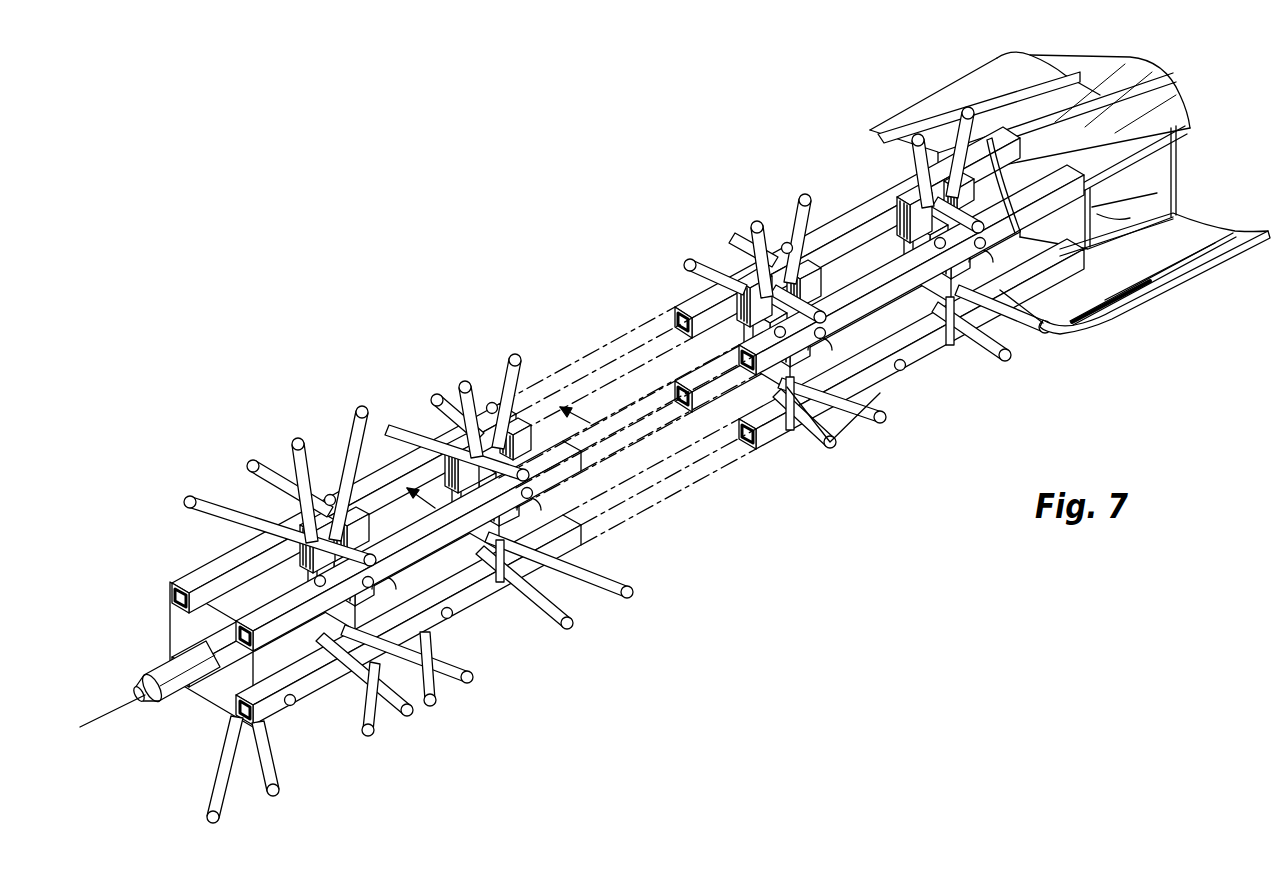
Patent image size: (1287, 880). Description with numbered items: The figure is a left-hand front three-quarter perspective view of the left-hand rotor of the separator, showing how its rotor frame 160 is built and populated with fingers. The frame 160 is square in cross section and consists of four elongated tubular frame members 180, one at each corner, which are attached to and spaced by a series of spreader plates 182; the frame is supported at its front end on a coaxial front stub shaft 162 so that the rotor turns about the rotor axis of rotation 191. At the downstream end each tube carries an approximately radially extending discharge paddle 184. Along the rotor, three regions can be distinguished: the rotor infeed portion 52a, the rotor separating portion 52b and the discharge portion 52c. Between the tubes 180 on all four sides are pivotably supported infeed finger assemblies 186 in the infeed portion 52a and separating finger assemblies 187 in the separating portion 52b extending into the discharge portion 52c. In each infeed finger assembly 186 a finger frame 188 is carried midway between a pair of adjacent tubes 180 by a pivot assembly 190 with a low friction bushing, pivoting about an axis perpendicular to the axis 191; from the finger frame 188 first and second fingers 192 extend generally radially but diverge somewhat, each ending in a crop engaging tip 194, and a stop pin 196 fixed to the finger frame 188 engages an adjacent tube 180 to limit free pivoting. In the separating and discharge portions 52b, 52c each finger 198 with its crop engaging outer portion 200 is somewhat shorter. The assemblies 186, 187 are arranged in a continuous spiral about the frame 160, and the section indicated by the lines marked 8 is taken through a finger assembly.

The rotor infeed portion 52a is at (395, 587).
The rotor separating portion 52b is at (757, 296).
The discharge portion 52c is at (845, 99).
The section line 8- 8 is at (498, 452).
The rotor frame 160 is at (596, 427).
The front stub shaft 162 is at (165, 663).
The tubular frame member 180 is at (690, 299).
The spreader plate 182 is at (172, 628).
The discharge paddle 184 is at (1122, 314).
The infeed finger assembly 186 is at (278, 450).
The separating finger assembly 187 is at (742, 209).
The finger frame 188 is at (695, 350).
The pivot assembly 190 is at (877, 382).
The rotor axis of rotation 191 is at (110, 713).
The finger 192 is at (343, 437).
The crop engaging tip 194 is at (360, 410).
The stop pin 196 is at (818, 307).
The finger 198 is at (793, 227).
The crop engaging outer portion 200 is at (805, 200).